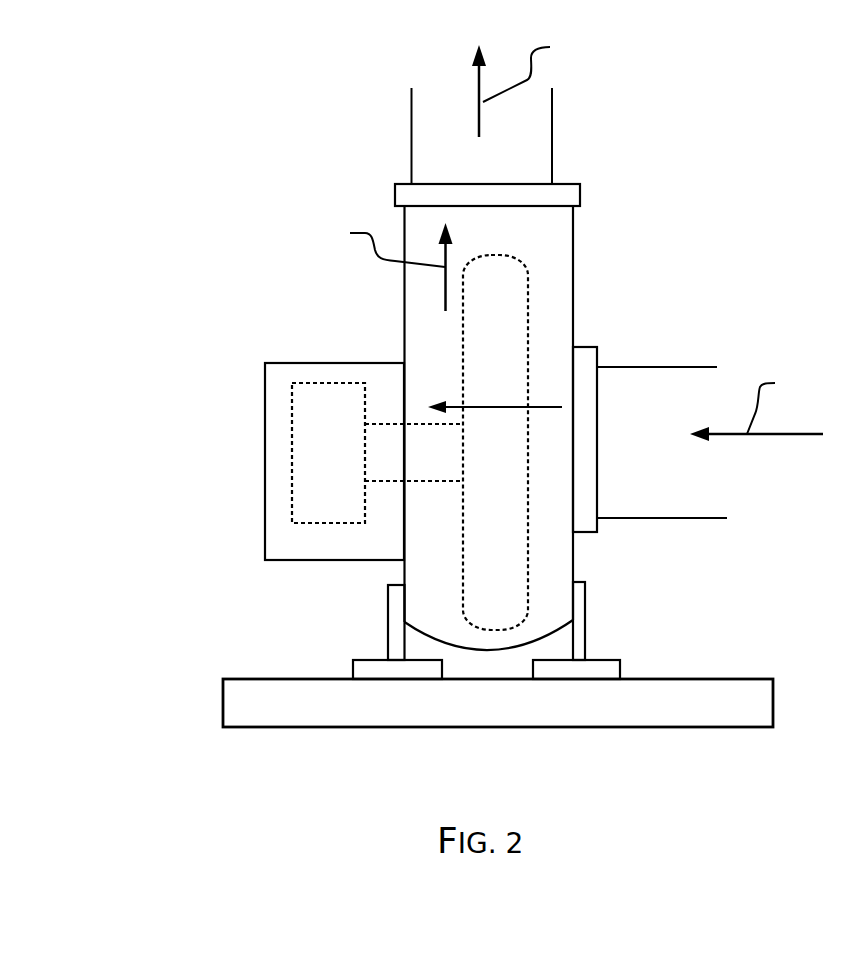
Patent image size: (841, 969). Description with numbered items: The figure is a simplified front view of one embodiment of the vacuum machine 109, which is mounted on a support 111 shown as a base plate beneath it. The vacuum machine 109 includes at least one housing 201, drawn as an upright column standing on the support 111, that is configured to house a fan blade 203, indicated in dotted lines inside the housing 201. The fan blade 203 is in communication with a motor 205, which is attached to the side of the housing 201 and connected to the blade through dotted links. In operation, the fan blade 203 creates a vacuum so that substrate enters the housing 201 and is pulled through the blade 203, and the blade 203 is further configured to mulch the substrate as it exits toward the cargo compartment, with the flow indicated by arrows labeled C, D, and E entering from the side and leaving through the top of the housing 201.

The vacuum machine 109 is at (146, 199).
The housing 201 is at (573, 235).
The fan blade 203 is at (528, 330).
The motor 205 is at (292, 447).
The support 111 is at (702, 679).